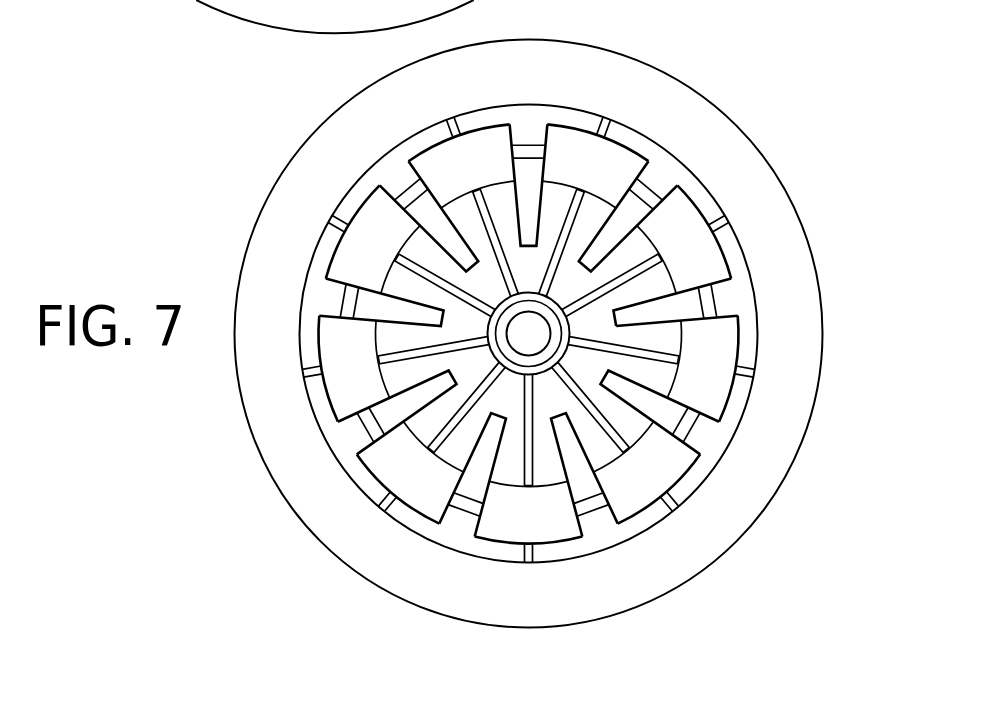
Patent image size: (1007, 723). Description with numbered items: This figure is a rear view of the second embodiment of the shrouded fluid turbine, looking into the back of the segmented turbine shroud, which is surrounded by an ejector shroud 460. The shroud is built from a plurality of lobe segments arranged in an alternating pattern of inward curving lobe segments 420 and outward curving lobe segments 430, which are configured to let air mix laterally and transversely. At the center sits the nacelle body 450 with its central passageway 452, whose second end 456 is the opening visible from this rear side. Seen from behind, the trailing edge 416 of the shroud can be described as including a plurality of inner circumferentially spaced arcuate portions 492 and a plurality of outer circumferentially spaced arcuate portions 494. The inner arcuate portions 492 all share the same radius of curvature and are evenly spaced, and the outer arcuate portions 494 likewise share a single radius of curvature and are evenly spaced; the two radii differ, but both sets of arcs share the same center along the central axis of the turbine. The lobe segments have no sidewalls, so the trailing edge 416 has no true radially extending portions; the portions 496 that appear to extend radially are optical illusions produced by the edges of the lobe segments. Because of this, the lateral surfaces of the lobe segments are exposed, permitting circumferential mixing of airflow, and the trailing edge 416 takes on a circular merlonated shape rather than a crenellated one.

The central passageway 452 is at (158, 0).
The inward curving lobe segment 420 is at (605, 240).
The ejector shroud 460 is at (648, 102).
The outward curving lobe segment 430 is at (685, 217).
The inner circumferentially spaced arcuate portion 492 is at (685, 307).
The apparently radially extending portion 496 is at (728, 317).
The outer circumferentially spaced arcuate portion 494 is at (740, 345).
The trailing edge 416 is at (332, 262).
The nacelle body 450 is at (500, 357).
The second end of the central passageway 456 is at (531, 337).